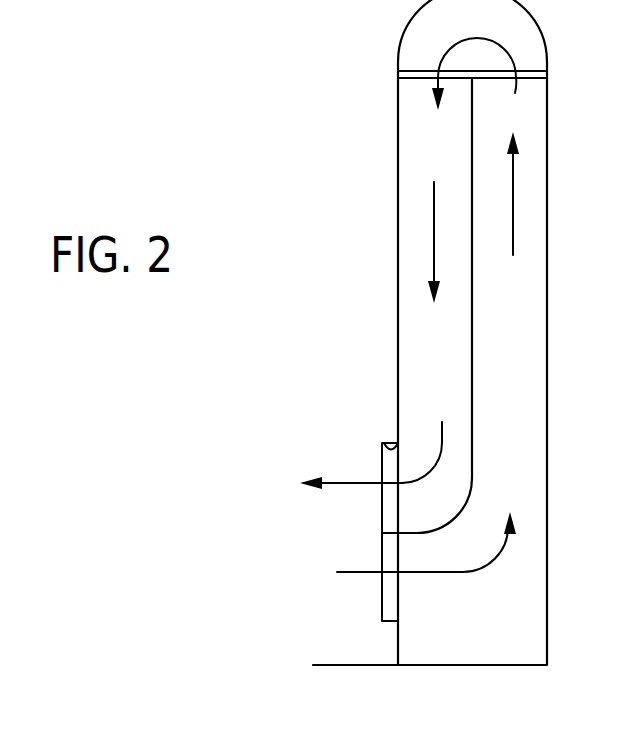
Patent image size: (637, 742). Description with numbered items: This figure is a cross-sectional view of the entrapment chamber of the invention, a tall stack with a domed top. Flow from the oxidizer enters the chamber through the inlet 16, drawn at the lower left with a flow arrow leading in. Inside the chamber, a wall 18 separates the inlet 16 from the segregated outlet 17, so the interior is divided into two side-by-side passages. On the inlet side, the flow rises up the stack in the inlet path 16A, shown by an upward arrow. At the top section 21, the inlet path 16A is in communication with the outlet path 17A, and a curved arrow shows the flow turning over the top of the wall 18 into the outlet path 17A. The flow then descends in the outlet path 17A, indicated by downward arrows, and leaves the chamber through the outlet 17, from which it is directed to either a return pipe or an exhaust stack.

The top section 21 is at (481, 30).
The outlet path 17A is at (448, 359).
The inlet path 16A is at (525, 387).
The wall 18 is at (472, 330).
The outlet 17 is at (360, 497).
The inlet 16 is at (360, 590).